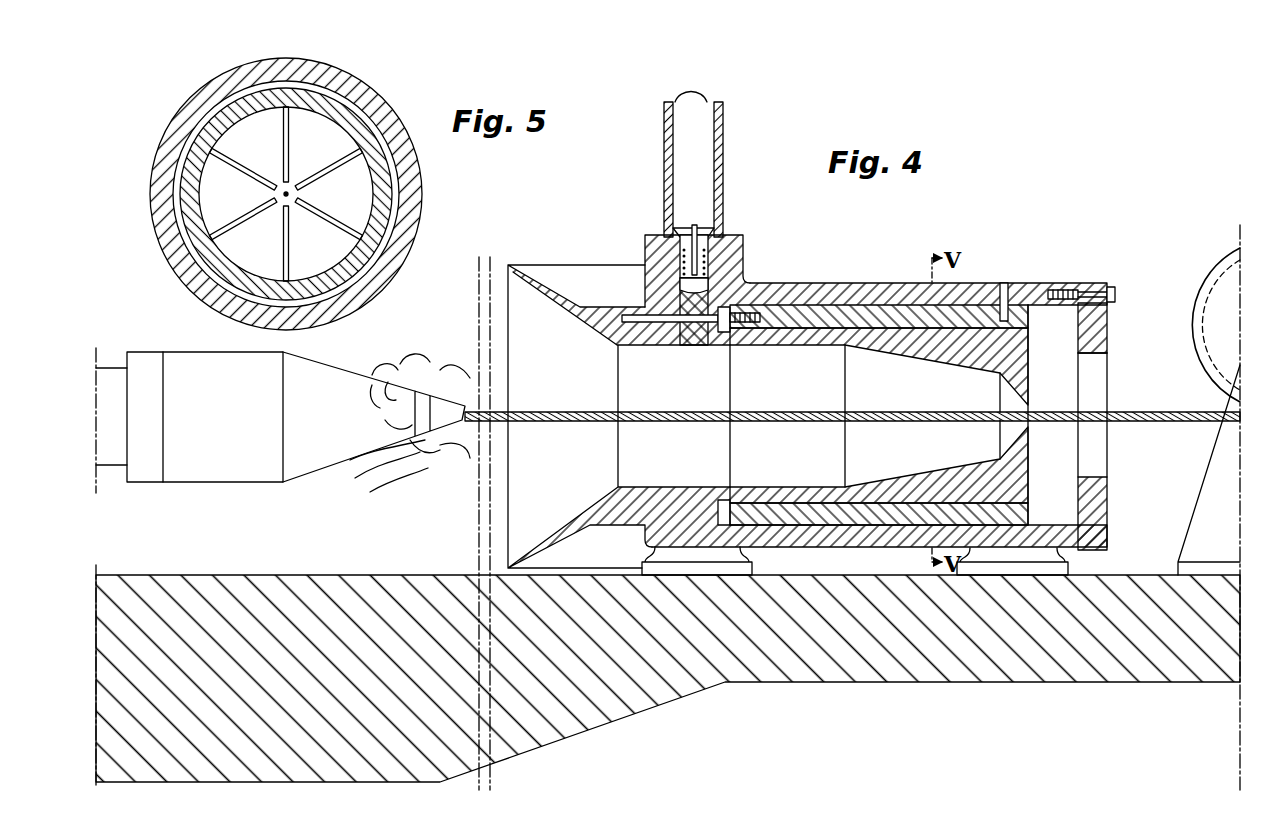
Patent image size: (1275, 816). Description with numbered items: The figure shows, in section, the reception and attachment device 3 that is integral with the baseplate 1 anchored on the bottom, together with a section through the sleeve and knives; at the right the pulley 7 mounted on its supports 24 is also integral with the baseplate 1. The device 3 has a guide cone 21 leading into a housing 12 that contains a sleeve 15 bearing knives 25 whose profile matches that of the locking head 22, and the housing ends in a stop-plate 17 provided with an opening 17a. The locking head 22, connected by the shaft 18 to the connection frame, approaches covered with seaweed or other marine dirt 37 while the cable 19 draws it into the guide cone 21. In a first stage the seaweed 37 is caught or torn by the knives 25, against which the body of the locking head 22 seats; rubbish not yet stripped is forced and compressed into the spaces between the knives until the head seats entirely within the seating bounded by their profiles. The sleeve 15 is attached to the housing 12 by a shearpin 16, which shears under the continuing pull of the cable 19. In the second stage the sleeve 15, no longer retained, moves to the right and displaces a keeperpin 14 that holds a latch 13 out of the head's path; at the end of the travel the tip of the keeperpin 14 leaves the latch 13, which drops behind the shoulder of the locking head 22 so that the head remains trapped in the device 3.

In FIG. 4, the baseplate 1 is at (823, 630).
In FIG. 4, the reception and attachment device 3 is at (612, 251).
In FIG. 4, the pulley 7 is at (1213, 280).
In FIG. 5, the housing 12 is at (383, 101).
In FIG. 4, the housing 12 is at (830, 293).
In FIG. 4, the latch 13 is at (741, 270).
In FIG. 4, the keeperpin 14 is at (667, 325).
In FIG. 5, the sleeve 15 is at (383, 203).
In FIG. 4, the sleeve 15 is at (963, 315).
In FIG. 4, the shearpin 16 is at (1008, 283).
In FIG. 4, the stop-plate 17 is at (1094, 331).
In FIG. 4, the opening 17a is at (1089, 356).
In FIG. 4, the shaft 18 is at (102, 450).
In FIG. 4, the cable 19 is at (568, 419).
In FIG. 4, the guide cone 21 is at (577, 309).
In FIG. 4, the locking head 22 is at (220, 455).
In FIG. 4, the supports 24 is at (1230, 505).
In FIG. 5, the knives 25 is at (341, 161).
In FIG. 4, the knives 25 is at (915, 490).
In FIG. 4, the seaweed or other marine dirt 37 is at (400, 468).